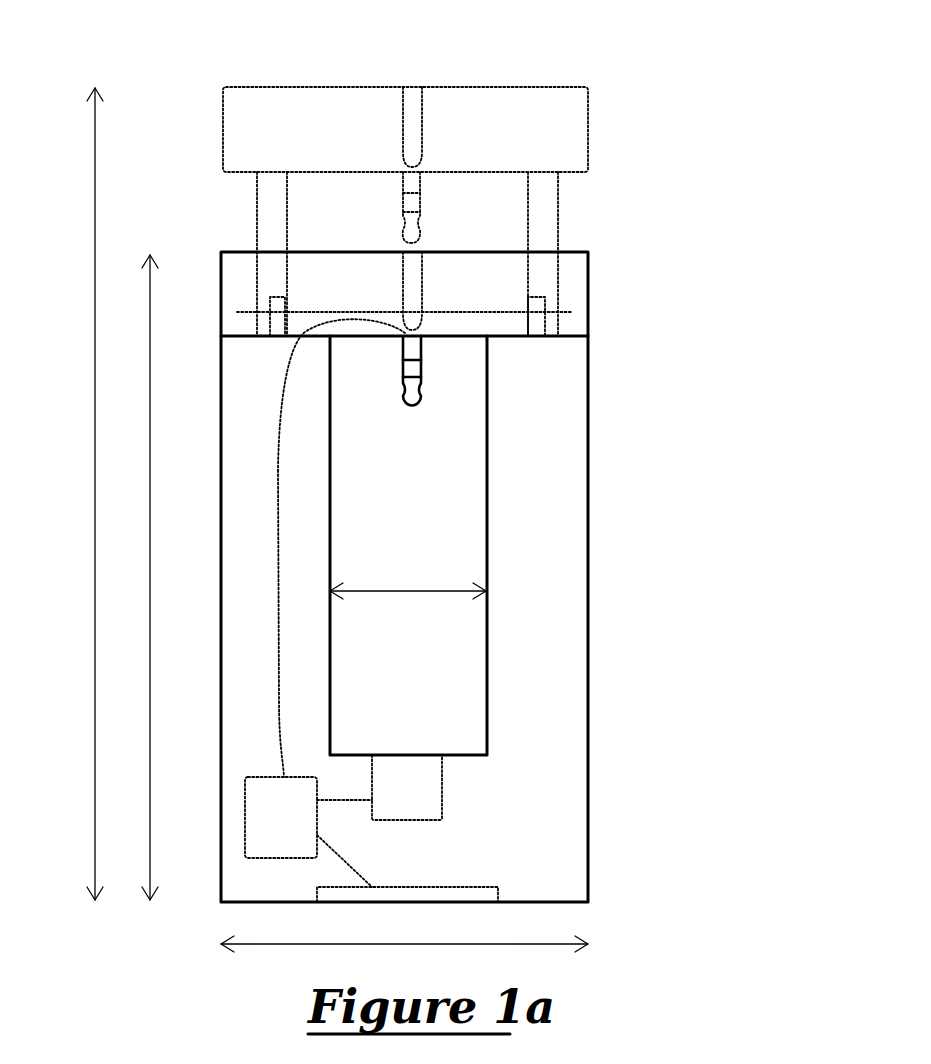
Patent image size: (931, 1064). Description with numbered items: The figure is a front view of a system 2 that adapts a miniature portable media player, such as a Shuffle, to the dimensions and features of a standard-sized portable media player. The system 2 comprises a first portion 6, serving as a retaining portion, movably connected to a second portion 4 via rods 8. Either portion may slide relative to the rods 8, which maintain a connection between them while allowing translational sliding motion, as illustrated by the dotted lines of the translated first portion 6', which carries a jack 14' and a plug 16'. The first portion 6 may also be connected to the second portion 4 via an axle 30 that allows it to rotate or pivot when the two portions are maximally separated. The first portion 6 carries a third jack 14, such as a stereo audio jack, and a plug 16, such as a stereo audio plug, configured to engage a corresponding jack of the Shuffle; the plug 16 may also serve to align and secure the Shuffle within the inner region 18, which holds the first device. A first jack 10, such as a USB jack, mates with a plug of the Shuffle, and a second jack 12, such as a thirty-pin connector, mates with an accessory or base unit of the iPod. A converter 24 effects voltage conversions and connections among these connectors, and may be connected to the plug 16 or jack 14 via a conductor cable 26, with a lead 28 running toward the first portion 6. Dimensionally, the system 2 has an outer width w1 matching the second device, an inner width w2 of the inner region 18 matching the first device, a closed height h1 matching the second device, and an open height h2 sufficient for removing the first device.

The system 2 is at (748, 345).
The second portion 4 is at (590, 478).
The first portion 6 is at (453, 298).
The translated first portion 6' is at (452, 118).
The rods 8 is at (257, 205).
The first jack 10 is at (442, 788).
The second jack 12 is at (498, 893).
The third jack 14 is at (461, 291).
The jack of translated first portion 14' is at (476, 87).
The plug 16 is at (442, 410).
The plug of translated first portion 16' is at (453, 207).
The inner region 18 is at (452, 666).
The converter 24 is at (308, 832).
The conductor cable 26 is at (276, 444).
The conduit inlet 28 is at (348, 312).
The axle 30 is at (537, 328).
The closed height h1 is at (132, 577).
The open height h2 is at (77, 494).
The outer width w1 is at (404, 935).
The inner width w2 is at (408, 581).